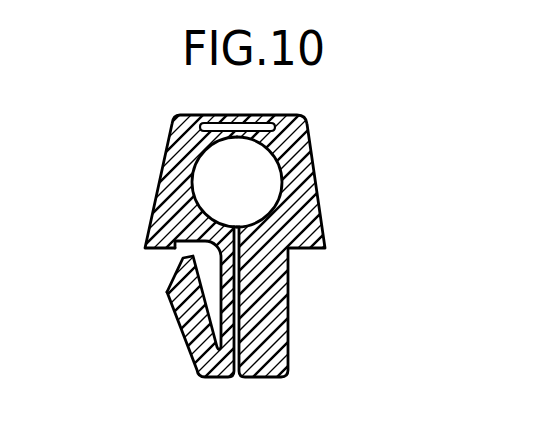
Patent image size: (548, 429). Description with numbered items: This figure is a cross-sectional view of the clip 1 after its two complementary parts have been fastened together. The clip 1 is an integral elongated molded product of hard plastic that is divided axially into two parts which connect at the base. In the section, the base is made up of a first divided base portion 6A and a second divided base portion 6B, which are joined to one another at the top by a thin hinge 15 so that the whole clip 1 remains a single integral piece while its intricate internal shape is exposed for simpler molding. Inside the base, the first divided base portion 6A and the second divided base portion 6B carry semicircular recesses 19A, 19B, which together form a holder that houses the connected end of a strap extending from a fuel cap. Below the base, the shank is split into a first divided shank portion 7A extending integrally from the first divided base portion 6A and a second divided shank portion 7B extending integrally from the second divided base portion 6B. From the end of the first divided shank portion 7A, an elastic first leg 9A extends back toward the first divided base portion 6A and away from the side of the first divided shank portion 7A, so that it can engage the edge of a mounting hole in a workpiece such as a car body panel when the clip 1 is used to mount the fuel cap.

The clip 1 is at (428, 122).
The thin hinge 15 is at (228, 114).
The first divided base portion 6A is at (158, 185).
The second divided base portion 6B is at (320, 208).
The semicircular recess 19A is at (206, 198).
The semicircular recess 19B is at (270, 157).
The first divided shank portion 7A is at (222, 266).
The second divided shank portion 7B is at (288, 270).
The first leg 9A is at (180, 325).